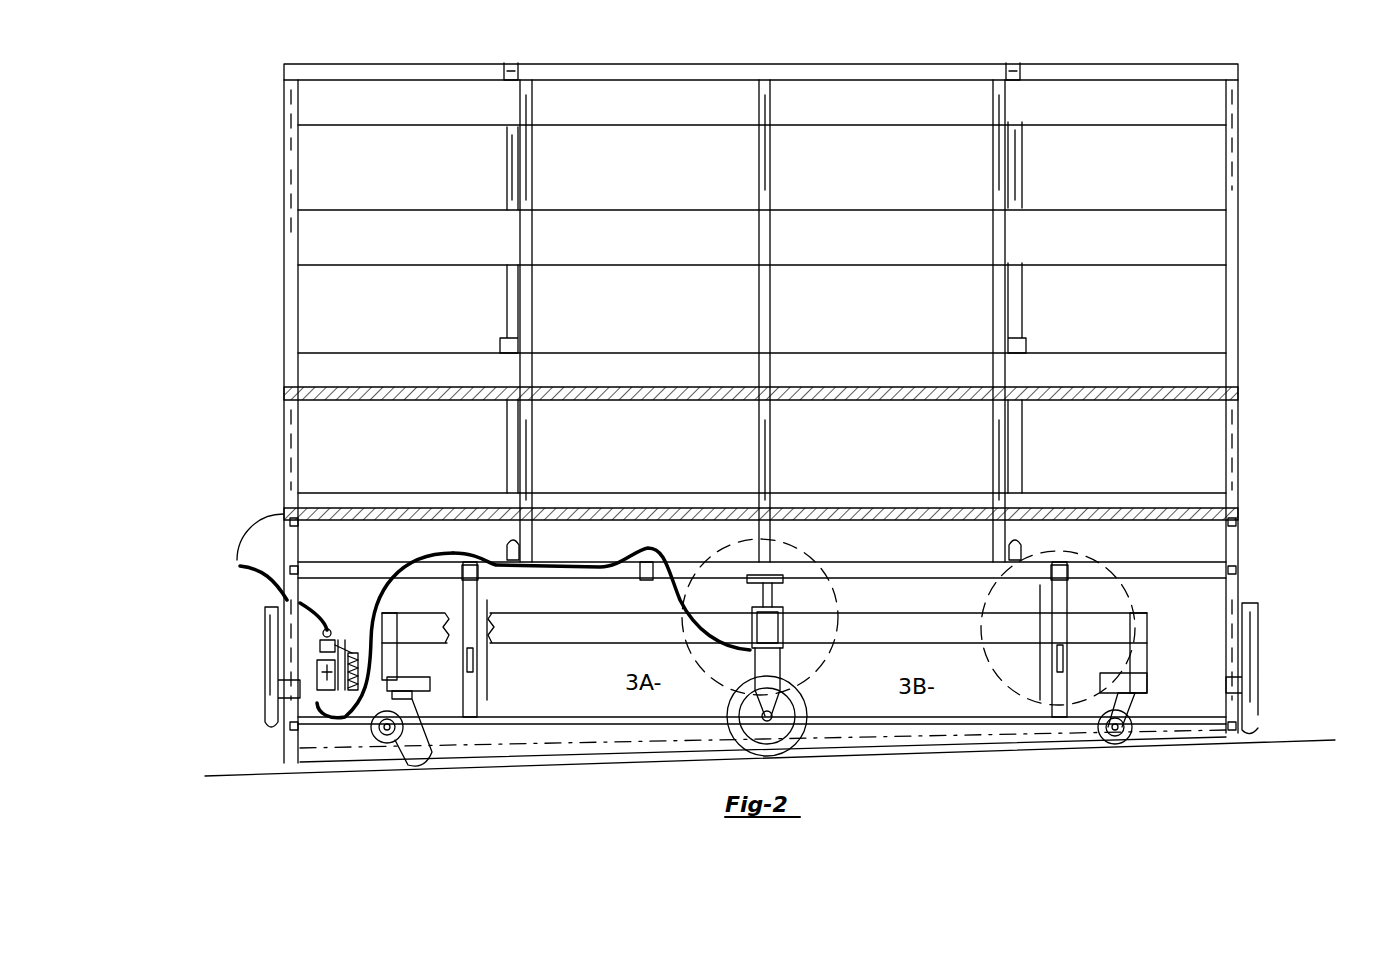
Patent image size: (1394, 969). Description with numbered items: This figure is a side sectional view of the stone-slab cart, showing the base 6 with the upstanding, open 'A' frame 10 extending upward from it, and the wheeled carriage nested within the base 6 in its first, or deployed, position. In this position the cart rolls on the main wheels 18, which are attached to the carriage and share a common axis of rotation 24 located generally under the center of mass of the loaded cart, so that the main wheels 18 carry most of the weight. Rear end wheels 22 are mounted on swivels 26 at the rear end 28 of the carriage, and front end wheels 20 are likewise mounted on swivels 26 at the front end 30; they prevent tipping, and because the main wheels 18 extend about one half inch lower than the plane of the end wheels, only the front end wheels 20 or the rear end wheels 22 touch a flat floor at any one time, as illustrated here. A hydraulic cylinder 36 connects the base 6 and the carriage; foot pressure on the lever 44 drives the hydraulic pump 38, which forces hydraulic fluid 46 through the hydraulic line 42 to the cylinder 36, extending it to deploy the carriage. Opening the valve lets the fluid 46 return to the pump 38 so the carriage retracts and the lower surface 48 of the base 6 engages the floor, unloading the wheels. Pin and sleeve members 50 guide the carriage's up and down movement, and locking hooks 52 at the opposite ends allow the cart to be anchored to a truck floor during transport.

The 'A' frame 10 is at (291, 258).
The rear end 28 is at (290, 376).
The front end 30 is at (1240, 437).
The main wheels 18 is at (743, 747).
The lower surface 48 is at (932, 733).
The hydraulic line 42 is at (583, 575).
The pin and sleeve members 50 is at (1052, 653).
The lever 44 is at (240, 566).
The hydraulic pump 38 is at (327, 668).
The locking hooks 52 is at (263, 710).
The base 6 is at (1237, 594).
The rear end wheels 22 is at (397, 743).
The swivels 26 is at (410, 700).
The hydraulic cylinder 36 is at (778, 648).
The axis of rotation 24 is at (770, 717).
The front end wheels 20 is at (1115, 745).
The hydraulic fluid 46 is at (648, 565).